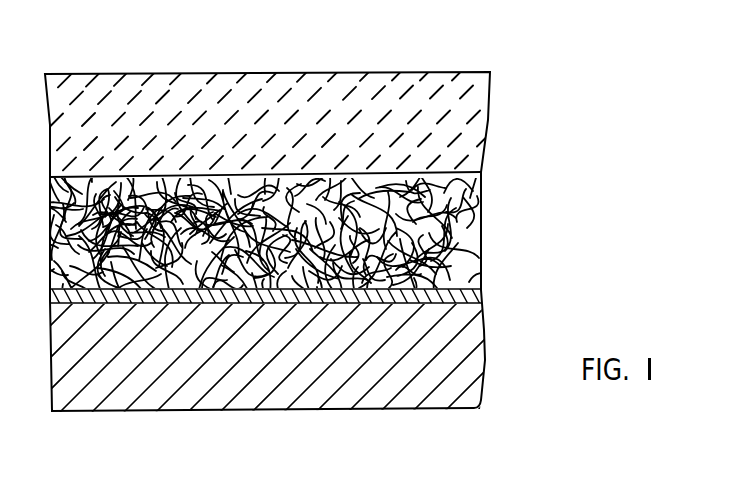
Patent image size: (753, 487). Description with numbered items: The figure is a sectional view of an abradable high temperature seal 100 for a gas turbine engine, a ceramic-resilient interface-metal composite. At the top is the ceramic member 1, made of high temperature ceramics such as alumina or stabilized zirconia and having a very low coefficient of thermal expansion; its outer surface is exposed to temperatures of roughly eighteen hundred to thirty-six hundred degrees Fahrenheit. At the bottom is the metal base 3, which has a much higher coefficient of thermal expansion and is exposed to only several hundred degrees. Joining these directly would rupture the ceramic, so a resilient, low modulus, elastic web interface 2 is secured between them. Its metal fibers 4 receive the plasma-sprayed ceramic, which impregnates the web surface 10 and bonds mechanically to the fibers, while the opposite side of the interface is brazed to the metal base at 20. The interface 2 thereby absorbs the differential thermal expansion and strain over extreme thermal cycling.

The abradable high temperature seal 100 is at (263, 73).
The ceramic member 1 is at (478, 94).
The surface of top layer 10 is at (453, 167).
The web interface 2 is at (274, 239).
The metal fibers 4 is at (455, 267).
The braze 20 is at (472, 292).
The metal base 3 is at (410, 395).